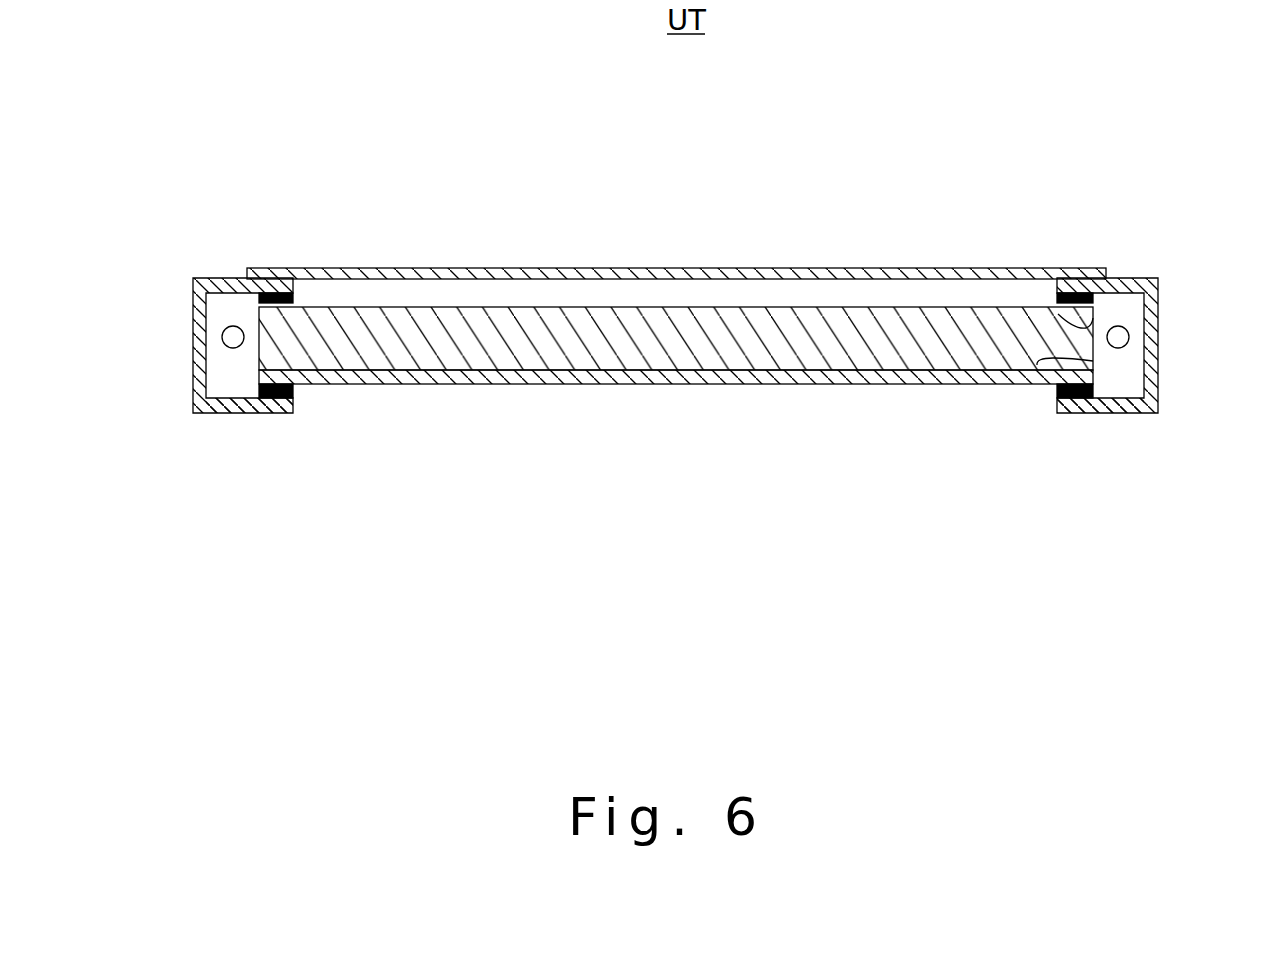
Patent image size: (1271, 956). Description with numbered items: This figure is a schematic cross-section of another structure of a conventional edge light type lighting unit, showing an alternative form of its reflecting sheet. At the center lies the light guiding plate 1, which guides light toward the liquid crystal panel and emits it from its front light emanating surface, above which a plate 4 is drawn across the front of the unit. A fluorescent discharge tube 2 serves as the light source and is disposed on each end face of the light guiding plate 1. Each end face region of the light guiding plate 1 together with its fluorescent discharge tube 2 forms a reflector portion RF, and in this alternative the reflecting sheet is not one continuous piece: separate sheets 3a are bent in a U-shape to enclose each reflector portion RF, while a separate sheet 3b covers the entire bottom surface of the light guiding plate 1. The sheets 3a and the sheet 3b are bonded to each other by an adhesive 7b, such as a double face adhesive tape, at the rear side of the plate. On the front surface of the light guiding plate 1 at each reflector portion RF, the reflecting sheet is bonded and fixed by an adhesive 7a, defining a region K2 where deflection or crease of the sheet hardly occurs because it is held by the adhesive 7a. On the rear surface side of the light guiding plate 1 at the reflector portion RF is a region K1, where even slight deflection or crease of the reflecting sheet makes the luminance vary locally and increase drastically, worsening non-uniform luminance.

The light guiding plate 1 is at (615, 330).
The fluorescent discharge tube 2 is at (222, 344).
The sheet 3a is at (237, 413).
The sheet 3b is at (740, 383).
The upper plate 4 is at (528, 274).
The adhesive 7a is at (295, 300).
The adhesive 7b is at (295, 393).
The region K1 is at (1090, 362).
The region K2 is at (1087, 335).
The reflector portion RF is at (226, 322).